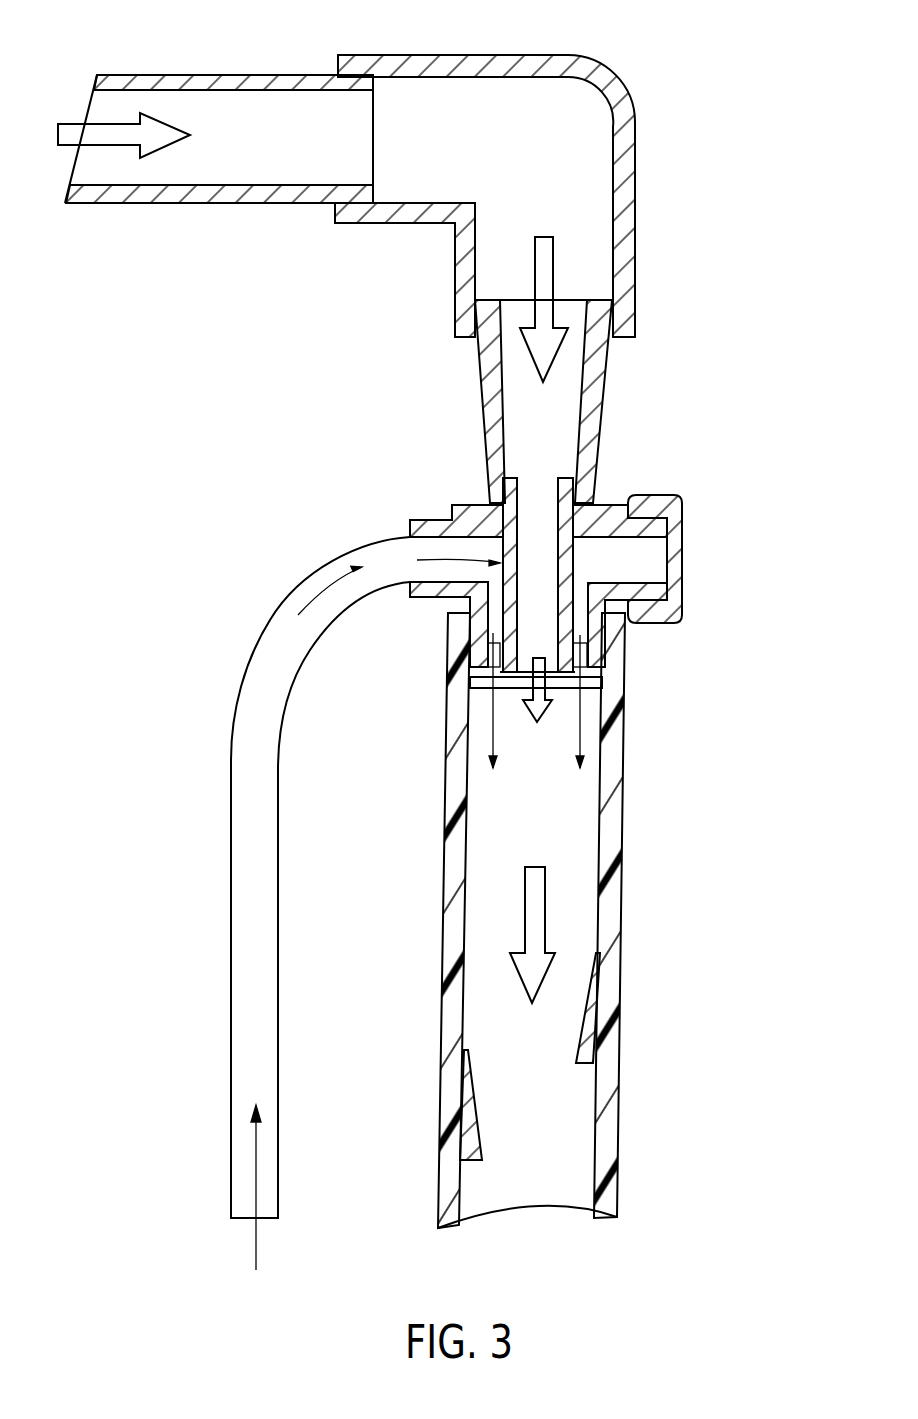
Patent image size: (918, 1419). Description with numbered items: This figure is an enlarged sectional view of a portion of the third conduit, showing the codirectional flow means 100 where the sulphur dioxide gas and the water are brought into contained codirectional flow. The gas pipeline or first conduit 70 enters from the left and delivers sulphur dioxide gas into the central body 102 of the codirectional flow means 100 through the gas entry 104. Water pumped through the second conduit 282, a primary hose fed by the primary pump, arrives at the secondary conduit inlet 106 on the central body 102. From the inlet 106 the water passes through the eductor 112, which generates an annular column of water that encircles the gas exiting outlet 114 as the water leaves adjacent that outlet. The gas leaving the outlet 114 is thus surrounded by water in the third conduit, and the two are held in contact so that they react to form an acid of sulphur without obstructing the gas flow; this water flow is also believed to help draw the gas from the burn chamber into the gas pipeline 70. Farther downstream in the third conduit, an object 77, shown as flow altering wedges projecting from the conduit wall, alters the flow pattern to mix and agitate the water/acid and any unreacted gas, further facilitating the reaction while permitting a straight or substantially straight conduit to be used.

The gas pipeline 70 is at (220, 73).
The codirectional flow means 100 is at (430, 385).
The central body 102 is at (604, 388).
The gas entry 104 is at (556, 530).
The secondary conduit inlet 106 is at (428, 607).
The eductor 112 is at (590, 668).
The gas exiting outlet 114 is at (522, 682).
The second conduit 282 is at (260, 783).
The object 77 is at (578, 1063).